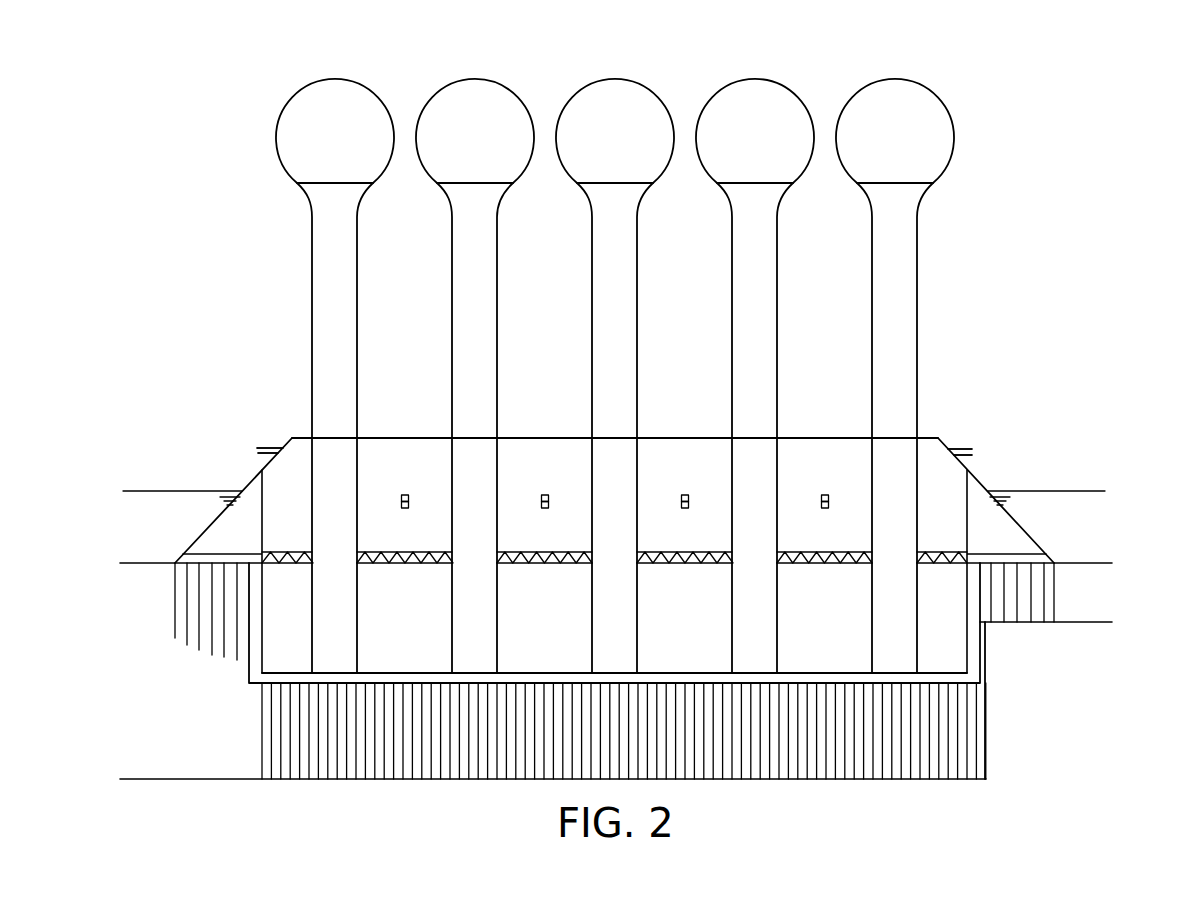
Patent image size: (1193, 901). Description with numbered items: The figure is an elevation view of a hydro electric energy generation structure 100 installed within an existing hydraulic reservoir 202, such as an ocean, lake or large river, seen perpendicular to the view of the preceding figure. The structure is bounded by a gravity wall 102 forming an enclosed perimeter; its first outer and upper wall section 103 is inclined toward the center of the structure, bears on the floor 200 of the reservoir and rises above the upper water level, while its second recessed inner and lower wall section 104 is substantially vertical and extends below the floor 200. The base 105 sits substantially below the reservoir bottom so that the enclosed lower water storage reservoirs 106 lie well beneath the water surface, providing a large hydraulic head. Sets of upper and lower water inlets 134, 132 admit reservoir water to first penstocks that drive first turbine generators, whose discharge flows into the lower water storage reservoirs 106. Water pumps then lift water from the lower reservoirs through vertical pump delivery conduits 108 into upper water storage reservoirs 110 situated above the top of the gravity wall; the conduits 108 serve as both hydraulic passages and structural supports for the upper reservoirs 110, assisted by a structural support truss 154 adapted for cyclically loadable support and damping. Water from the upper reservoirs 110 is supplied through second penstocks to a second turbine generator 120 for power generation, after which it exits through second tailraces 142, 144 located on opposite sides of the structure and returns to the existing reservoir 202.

The hydro electric energy generation structure 100 is at (1024, 66).
The gravity wall 102 is at (243, 512).
The first outer and upper wall section 103 is at (200, 530).
The second recessed inner and lower wall section 104 is at (248, 668).
The base 105 is at (668, 673).
The lower water storage reservoirs 106 is at (428, 642).
The pump delivery conduits 108 is at (342, 265).
The upper water storage reservoirs 110 is at (350, 81).
The second turbine generator 120 is at (297, 468).
The lower water inlet 132 is at (405, 495).
The upper water inlet 134 is at (405, 508).
The second tailrace 142 is at (253, 450).
The second tailrace 144 is at (972, 452).
The structural support truss 154 is at (375, 552).
The floor of hydraulic reservoir 200 is at (185, 677).
The hydraulic reservoir 202 is at (168, 536).